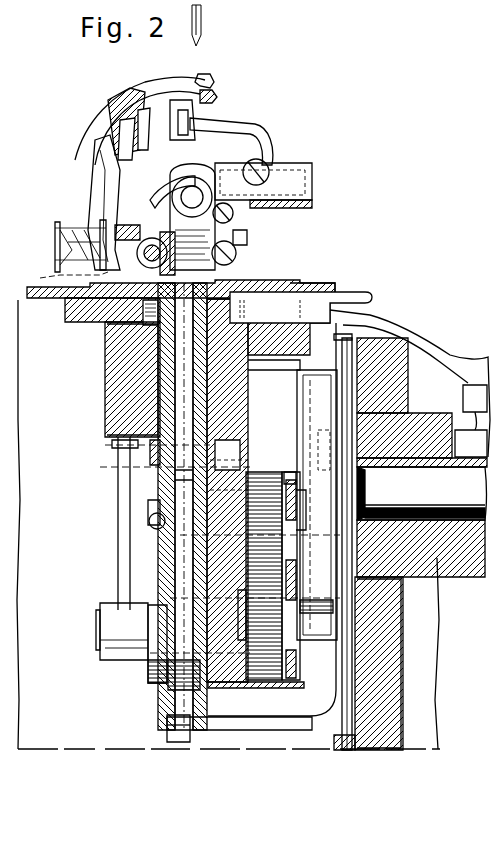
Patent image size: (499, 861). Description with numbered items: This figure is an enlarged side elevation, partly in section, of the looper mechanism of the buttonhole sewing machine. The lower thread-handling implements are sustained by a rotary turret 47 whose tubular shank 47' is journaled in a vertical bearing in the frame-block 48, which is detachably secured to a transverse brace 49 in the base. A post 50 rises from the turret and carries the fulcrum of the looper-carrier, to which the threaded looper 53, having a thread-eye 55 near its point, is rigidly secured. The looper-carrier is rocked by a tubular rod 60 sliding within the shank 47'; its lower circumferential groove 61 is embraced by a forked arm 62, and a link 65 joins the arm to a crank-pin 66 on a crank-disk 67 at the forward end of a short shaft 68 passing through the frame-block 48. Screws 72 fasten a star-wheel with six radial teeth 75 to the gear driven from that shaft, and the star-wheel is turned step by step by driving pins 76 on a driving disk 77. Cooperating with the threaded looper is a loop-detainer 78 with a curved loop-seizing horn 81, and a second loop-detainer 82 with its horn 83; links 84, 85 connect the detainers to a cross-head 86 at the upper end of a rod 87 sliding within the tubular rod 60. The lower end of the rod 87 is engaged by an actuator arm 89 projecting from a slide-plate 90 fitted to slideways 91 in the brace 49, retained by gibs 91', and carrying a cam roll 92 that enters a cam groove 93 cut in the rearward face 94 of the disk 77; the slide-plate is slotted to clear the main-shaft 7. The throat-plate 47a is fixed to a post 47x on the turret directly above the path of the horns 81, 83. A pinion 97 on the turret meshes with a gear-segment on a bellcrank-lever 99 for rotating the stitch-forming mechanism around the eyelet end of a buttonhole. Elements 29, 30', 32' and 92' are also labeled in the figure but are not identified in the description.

The main-shaft 7 is at (422, 493).
The cylinder 29 is at (191, 190).
The bracket 30' is at (274, 185).
The link 32' is at (181, 174).
The rotary turret 47 is at (181, 283).
The tubular shank 47' is at (116, 379).
The throat-plate 47a is at (207, 70).
The post 47x is at (75, 276).
The frame-block 48 is at (110, 399).
The transverse brace 49 is at (400, 378).
The post 50 is at (255, 204).
The threaded looper 53 is at (212, 136).
The thread-eye 55 is at (196, 116).
The tubular rod 60 is at (165, 412).
The circumferential groove 61 is at (148, 532).
The arm 62 is at (158, 509).
The link 65 is at (120, 555).
The crank-pin 66 is at (100, 617).
The crank-disk 67 is at (150, 660).
The short shaft 68 is at (196, 678).
The screws 72 is at (304, 408).
The radial teeth 75 is at (300, 510).
The driving pins 76 is at (290, 472).
The driving disk 77 is at (321, 372).
The loop-detainer 78 is at (97, 150).
The loop-seizing horn 81 is at (138, 124).
The second loop-detainer 82 is at (165, 88).
The loop-seizing horn 83 is at (217, 99).
The link 84 is at (140, 225).
The link 85 is at (247, 238).
The cross-head 86 is at (237, 255).
The rod 87 is at (180, 477).
The actuator arm 89 is at (270, 717).
The slide-plate 90 is at (368, 668).
The slideways 91 is at (345, 541).
The retainer gibs 91' is at (326, 541).
The cam roll 92 is at (316, 626).
The plate end 92' is at (312, 283).
The cam groove 93 is at (390, 485).
The rearward face 94 is at (379, 493).
The pinion 97 is at (140, 323).
The bellcrank-lever 99 is at (452, 355).